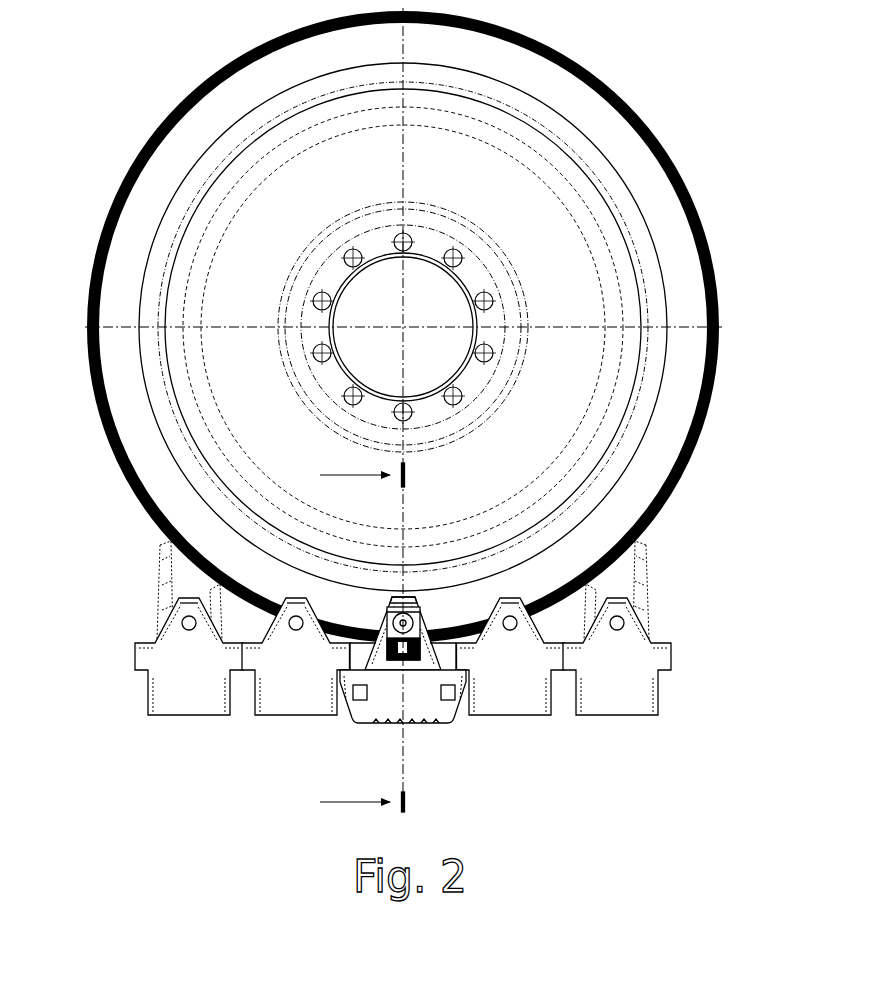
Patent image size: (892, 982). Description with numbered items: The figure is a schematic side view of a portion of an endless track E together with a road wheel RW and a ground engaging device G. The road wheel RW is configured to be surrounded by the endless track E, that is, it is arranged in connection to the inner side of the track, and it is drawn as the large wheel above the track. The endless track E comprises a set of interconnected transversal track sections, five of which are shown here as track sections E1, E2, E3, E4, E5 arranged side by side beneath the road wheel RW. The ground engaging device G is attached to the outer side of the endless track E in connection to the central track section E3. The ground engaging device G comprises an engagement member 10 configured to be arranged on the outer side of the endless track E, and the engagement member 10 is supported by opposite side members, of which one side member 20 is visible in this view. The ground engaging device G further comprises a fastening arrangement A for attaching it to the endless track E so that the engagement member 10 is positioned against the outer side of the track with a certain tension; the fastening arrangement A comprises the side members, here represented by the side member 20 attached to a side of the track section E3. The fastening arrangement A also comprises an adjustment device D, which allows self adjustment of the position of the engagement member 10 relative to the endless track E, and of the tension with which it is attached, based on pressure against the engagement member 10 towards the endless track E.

The road wheel RW is at (556, 44).
The endless track E is at (659, 610).
The track section E1 is at (182, 718).
The track section E2 is at (275, 718).
The track section E3 is at (431, 611).
The track section E4 is at (540, 718).
The track section E5 is at (620, 718).
The adjustment device D is at (384, 632).
The ground engaging device G is at (372, 728).
The engagement member 10 is at (418, 729).
The side member 20 is at (458, 719).
The fastening arrangement A is at (458, 646).